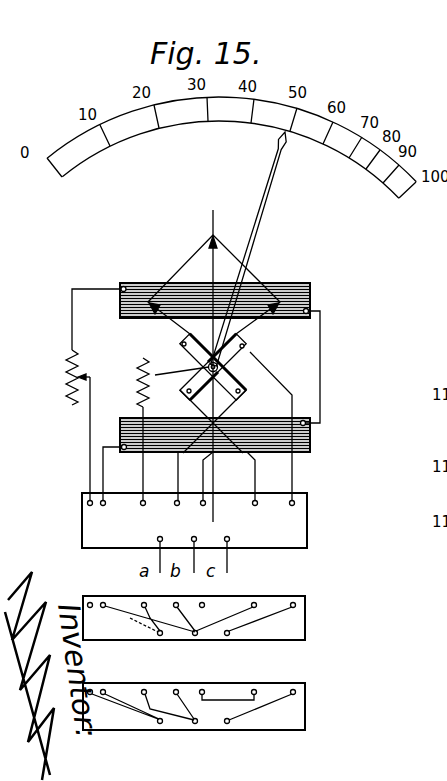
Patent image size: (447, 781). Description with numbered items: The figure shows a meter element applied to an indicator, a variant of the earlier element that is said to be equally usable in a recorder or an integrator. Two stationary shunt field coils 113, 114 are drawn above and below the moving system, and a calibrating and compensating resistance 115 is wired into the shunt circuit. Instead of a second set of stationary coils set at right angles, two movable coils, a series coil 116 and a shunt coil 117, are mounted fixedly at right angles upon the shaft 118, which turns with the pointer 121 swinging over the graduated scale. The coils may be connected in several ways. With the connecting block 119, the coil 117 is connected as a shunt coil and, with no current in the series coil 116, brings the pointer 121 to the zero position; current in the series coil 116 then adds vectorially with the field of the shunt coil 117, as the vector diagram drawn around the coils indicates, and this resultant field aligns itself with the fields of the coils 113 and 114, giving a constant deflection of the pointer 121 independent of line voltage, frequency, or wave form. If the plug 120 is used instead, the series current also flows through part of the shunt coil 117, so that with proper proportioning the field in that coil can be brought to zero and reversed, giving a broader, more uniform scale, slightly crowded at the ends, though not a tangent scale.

The shunt field coil 113 is at (310, 300).
The shunt field coil 114 is at (310, 437).
The calibrating and compensating resistance 115 is at (65, 360).
The series coil 116 is at (247, 347).
The shunt coil 117 is at (237, 382).
The shaft 118 is at (155, 375).
The connecting block 119 is at (296, 622).
The plug 120 is at (285, 708).
The pointer 121 is at (263, 218).